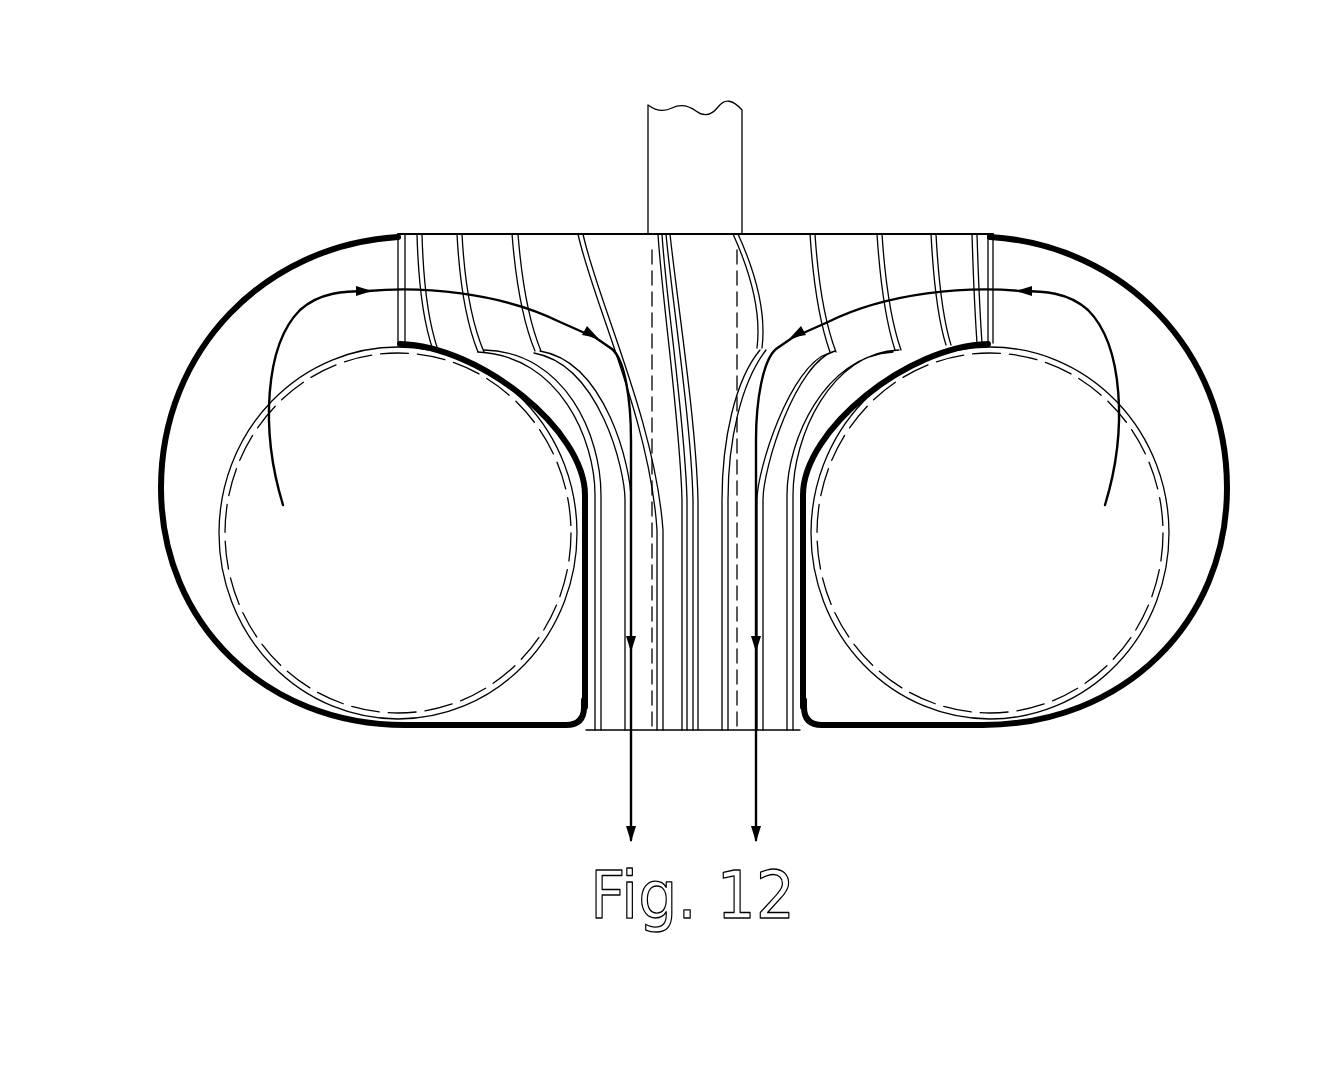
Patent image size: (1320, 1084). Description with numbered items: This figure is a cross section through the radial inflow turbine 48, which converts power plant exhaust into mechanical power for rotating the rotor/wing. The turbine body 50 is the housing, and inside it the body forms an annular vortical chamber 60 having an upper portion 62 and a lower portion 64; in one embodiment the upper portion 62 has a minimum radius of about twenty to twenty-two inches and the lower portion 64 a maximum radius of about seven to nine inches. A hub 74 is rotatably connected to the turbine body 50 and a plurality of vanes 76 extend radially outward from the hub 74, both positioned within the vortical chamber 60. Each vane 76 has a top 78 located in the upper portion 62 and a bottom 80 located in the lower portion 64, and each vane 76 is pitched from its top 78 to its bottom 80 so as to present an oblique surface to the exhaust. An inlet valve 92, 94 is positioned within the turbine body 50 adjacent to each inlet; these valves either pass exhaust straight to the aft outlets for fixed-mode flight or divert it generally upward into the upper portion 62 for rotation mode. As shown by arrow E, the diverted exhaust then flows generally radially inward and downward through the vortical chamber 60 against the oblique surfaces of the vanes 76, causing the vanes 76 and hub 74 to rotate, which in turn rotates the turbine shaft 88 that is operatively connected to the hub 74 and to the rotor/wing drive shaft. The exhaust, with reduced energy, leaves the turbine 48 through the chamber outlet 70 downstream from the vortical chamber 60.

The radial inflow turbine 48 is at (699, 449).
The turbine body 50 is at (1165, 305).
The vortical chamber 60 is at (583, 563).
The upper portion 62 is at (322, 262).
The lower portion 64 is at (797, 664).
The chamber outlet 70 is at (807, 727).
The hub 74 is at (650, 275).
The vanes 76 is at (992, 258).
The top 78 is at (918, 234).
The bottom 80 is at (769, 733).
The turbine shaft 88 is at (743, 158).
The inlet valve 92 is at (255, 638).
The inlet valve 94 is at (1150, 615).
The arrow E is at (754, 784).